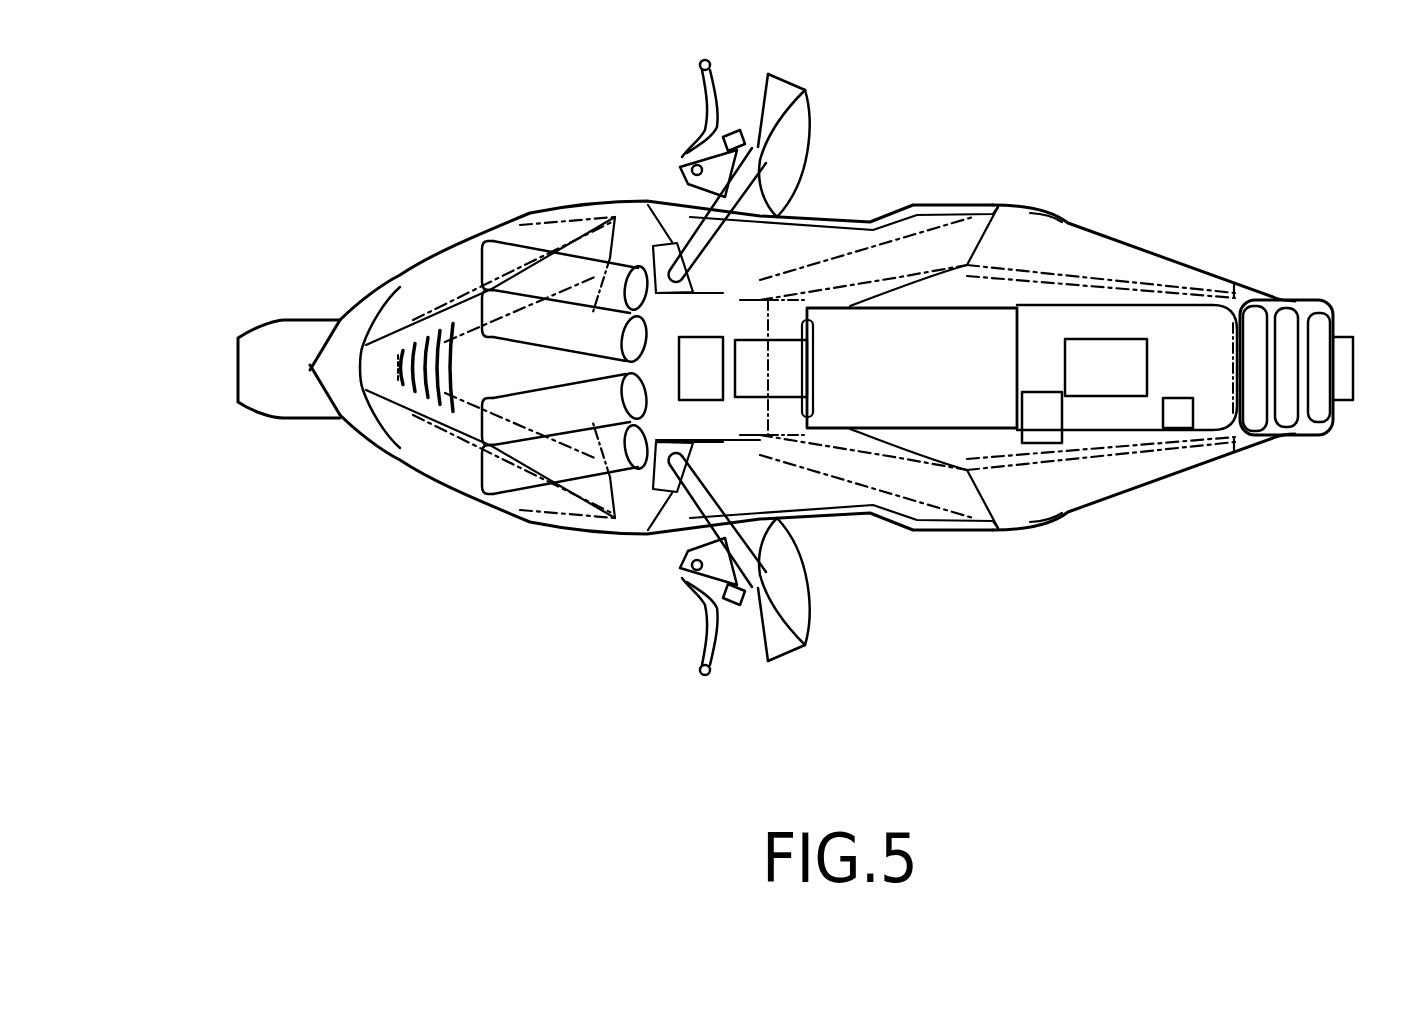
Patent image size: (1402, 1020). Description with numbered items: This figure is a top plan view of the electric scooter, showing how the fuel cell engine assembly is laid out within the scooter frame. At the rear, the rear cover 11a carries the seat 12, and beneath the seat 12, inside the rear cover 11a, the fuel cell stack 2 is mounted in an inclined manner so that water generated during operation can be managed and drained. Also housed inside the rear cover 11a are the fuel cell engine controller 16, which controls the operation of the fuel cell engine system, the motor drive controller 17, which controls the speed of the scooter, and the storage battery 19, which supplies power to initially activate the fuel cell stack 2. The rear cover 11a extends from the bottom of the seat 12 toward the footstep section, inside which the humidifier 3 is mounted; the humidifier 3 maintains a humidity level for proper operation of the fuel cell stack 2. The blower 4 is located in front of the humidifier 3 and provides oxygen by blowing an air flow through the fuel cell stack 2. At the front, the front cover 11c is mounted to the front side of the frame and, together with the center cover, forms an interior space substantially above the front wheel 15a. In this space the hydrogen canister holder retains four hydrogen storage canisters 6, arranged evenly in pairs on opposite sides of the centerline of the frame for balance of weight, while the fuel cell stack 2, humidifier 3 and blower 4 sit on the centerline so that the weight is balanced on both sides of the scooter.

The fuel cell stack 2 is at (942, 410).
The humidifier 3 is at (785, 387).
The blower 4 is at (705, 360).
The hydrogen storage canister 6 is at (512, 255).
The rear cover 11a is at (1177, 263).
The front cover 11c is at (437, 256).
The seat 12 is at (1083, 290).
The front wheel 15a is at (260, 387).
The fuel cell engine controller 16 is at (1103, 383).
The motor drive controller 17 is at (1178, 420).
The storage battery 19 is at (1047, 432).